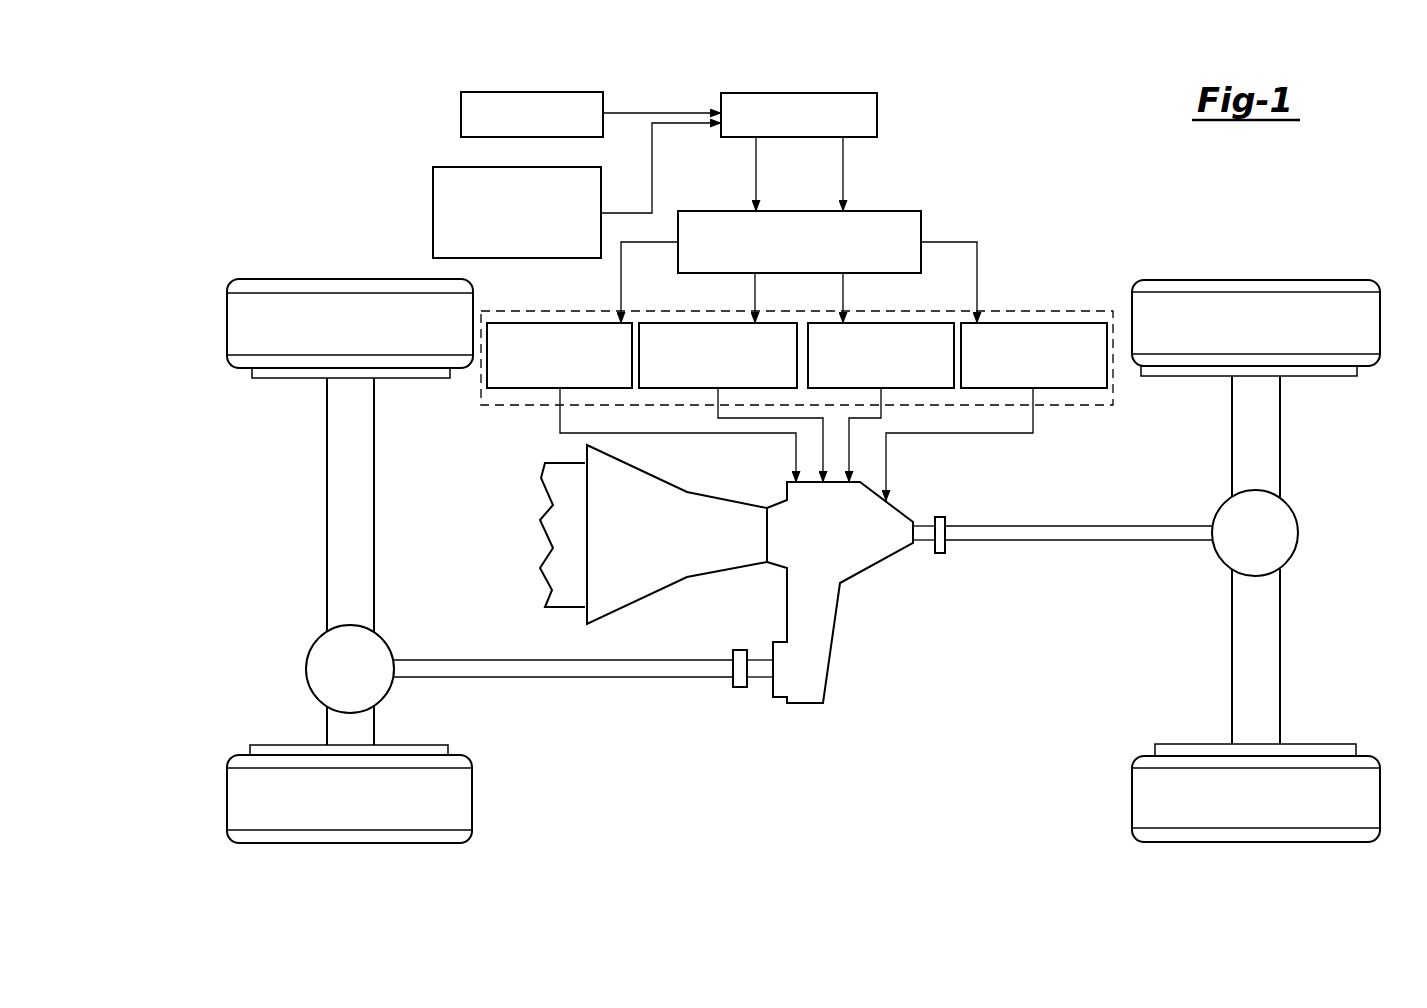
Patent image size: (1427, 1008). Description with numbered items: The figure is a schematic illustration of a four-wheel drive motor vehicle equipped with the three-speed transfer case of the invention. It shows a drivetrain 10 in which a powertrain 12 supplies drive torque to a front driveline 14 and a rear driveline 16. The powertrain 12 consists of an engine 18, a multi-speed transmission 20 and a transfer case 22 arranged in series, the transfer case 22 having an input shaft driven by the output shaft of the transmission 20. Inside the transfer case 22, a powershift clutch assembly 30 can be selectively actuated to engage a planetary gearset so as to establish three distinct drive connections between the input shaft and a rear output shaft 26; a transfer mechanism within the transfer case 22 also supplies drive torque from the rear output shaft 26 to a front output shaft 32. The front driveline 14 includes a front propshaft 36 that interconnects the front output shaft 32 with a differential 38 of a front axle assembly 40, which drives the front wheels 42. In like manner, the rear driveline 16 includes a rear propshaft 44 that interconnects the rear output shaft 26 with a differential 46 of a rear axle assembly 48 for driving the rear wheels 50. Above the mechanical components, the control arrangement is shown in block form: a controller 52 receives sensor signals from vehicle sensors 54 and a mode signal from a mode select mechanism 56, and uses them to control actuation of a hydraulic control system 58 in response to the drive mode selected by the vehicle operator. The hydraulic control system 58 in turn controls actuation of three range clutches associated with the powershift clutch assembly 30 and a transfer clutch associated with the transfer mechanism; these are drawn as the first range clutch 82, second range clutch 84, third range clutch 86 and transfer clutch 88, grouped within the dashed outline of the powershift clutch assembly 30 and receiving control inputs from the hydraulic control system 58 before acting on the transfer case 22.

The drivetrain 10 is at (962, 192).
The powertrain 12 is at (767, 574).
The front driveline 14 is at (393, 521).
The rear driveline 16 is at (1213, 527).
The engine 18 is at (558, 518).
The multi-speed transmission 20 is at (706, 554).
The transfer case 22 is at (882, 574).
The rear output shaft 26 is at (925, 518).
The powershift clutch assembly 30 is at (1116, 392).
The front output shaft 32 is at (757, 668).
The front propshaft 36 is at (682, 668).
The differential 38 is at (310, 650).
The front axle assembly 40 is at (340, 456).
The front wheels 42 is at (280, 308).
The rear propshaft 44 is at (1143, 535).
The differential 46 is at (1300, 533).
The rear axle assembly 48 is at (1260, 433).
The rear wheels 50 is at (1228, 308).
The controller 52 is at (877, 110).
The vehicle sensors 54 is at (461, 113).
The mode select mechanism 56 is at (433, 213).
The hydraulic control system 58 is at (928, 224).
The first range clutch 82 is at (570, 323).
The second range clutch 84 is at (705, 323).
The third range clutch 86 is at (903, 325).
The transfer clutch 88 is at (1018, 325).